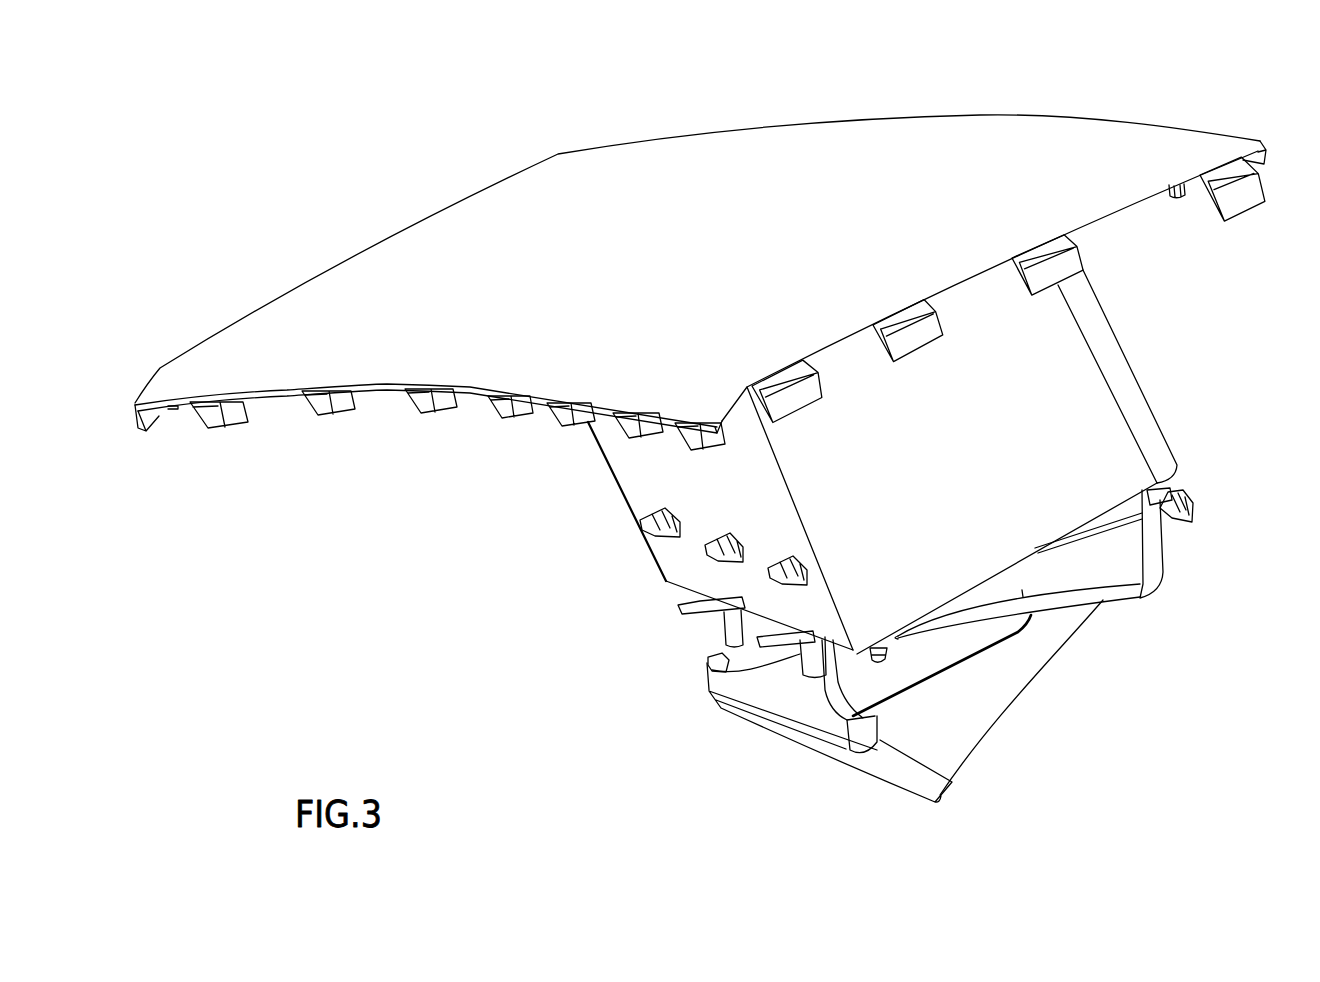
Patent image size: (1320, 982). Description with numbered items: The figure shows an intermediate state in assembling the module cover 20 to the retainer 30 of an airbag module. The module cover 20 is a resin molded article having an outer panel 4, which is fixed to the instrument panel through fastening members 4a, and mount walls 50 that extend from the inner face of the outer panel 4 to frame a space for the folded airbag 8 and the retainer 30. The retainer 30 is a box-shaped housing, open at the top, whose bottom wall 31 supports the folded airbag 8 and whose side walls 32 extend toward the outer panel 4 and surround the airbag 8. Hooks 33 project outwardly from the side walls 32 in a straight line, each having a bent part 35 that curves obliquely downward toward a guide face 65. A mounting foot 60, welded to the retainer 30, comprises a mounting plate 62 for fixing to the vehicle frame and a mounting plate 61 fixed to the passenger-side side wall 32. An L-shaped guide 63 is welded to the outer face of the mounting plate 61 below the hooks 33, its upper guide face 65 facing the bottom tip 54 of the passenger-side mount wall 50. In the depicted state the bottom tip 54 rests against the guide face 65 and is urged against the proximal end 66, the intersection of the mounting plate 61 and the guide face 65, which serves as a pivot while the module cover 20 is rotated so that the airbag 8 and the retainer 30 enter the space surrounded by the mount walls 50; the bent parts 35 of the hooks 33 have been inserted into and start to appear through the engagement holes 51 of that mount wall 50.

The outer panel 4 is at (950, 133).
The fastening members 4a is at (316, 410).
The module cover 20 is at (1204, 296).
The mount walls 50 is at (617, 443).
The engagement holes 51 is at (773, 560).
The hooks 33 is at (1191, 508).
The bent part 35 is at (788, 583).
The airbag 8 is at (1148, 490).
The retainer 30 is at (1076, 581).
The bottom wall 31 is at (1117, 608).
The side walls 32 is at (1164, 553).
The bottom tip 54 is at (838, 667).
The mounting foot 60 is at (863, 709).
The mounting plate 61 is at (752, 694).
The mounting plate 62 is at (800, 743).
The guide 63 is at (714, 612).
The guide face 65 is at (705, 610).
The proximal end 66 is at (716, 616).